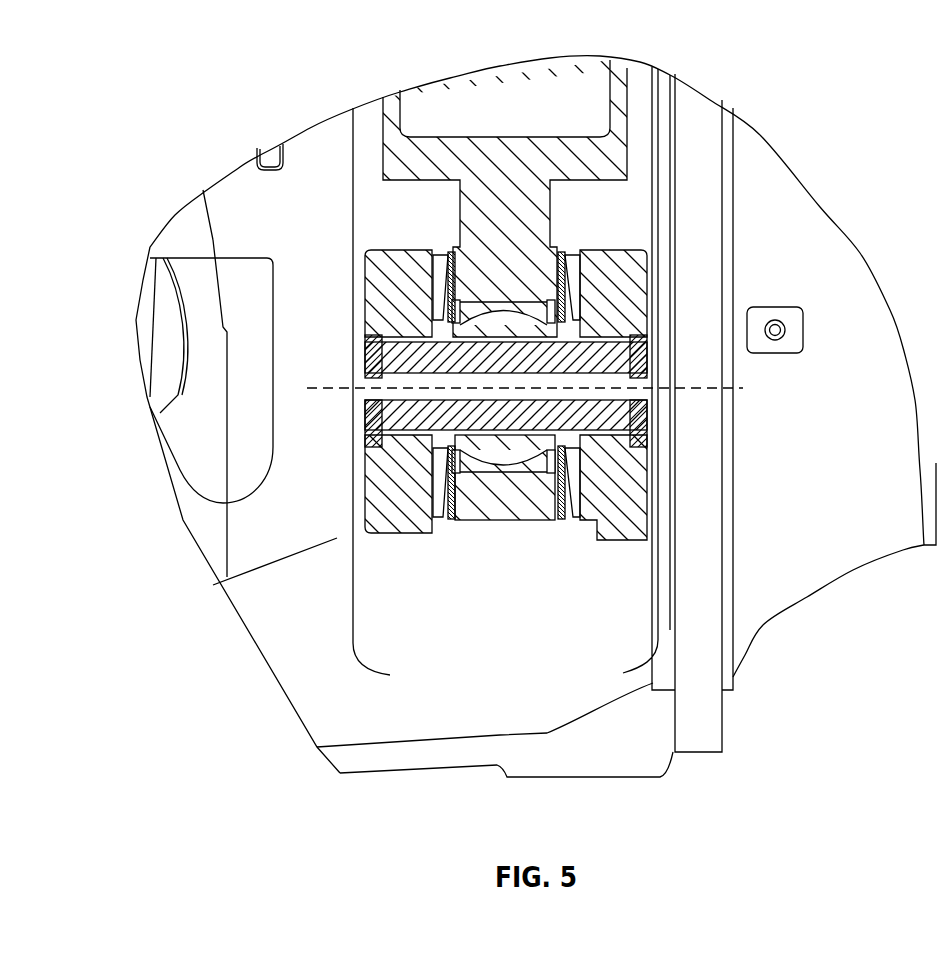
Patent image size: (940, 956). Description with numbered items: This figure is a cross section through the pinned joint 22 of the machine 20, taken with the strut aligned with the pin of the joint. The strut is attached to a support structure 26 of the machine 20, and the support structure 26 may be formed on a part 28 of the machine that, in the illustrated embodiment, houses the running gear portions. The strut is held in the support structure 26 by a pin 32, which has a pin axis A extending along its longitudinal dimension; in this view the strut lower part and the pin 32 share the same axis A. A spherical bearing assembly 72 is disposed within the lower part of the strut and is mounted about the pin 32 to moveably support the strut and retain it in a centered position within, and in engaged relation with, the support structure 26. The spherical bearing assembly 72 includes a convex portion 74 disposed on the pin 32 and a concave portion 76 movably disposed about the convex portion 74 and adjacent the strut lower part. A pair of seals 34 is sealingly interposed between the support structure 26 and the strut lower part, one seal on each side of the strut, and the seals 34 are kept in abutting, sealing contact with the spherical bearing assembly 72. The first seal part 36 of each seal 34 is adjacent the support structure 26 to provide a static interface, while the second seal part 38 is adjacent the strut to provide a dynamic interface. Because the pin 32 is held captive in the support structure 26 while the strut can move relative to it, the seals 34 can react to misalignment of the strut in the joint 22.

The machine 20 is at (812, 220).
The pinned joint 22 is at (703, 370).
The support structure 26 is at (630, 270).
The part of the machine 28 is at (847, 270).
The pin 32 is at (650, 417).
The seals 34 is at (574, 248).
The first seal part 36 is at (613, 510).
The second seal part 38 is at (547, 505).
The spherical bearing assembly 72 is at (500, 290).
The convex portion 74 is at (507, 455).
The concave portion 76 is at (522, 300).
The pin axis A is at (332, 388).